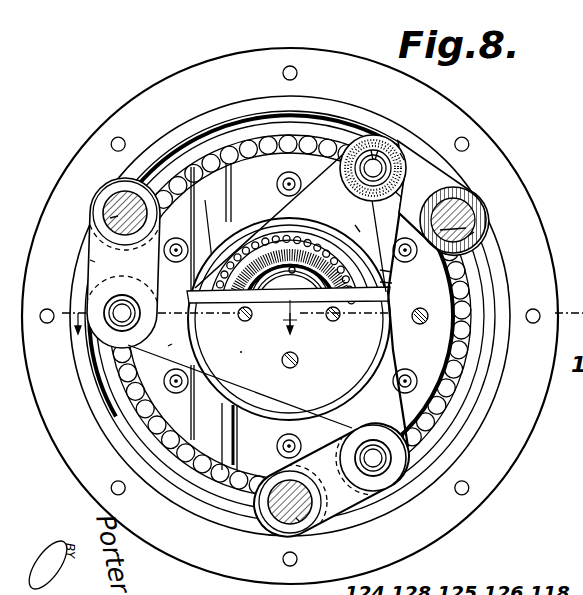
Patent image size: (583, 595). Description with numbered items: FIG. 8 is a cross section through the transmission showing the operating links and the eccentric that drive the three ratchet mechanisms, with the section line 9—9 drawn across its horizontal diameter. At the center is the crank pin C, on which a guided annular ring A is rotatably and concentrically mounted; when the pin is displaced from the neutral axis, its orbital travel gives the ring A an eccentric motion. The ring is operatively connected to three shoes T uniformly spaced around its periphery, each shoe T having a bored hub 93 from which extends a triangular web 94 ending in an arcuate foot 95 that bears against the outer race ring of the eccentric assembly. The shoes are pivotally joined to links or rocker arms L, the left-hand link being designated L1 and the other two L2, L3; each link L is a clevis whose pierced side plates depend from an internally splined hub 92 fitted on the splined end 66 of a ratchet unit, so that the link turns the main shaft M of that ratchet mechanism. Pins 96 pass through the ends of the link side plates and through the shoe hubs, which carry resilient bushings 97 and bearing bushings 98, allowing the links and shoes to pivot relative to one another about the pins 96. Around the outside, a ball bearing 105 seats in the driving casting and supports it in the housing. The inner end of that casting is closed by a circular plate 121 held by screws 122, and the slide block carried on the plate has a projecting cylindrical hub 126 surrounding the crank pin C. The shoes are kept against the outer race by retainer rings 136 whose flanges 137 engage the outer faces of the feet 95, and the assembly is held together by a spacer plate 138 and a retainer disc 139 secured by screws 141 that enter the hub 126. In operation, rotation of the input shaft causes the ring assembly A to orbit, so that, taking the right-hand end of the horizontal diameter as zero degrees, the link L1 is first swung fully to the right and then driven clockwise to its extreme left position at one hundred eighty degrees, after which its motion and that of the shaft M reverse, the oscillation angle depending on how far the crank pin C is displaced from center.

The section line 9- 9 is at (314, 325).
The splined ends 66 is at (468, 228).
The internally splined hubs 92 is at (272, 512).
The bored hub 93 is at (400, 153).
The triangular web 94 is at (274, 316).
The arcuate foot 95 is at (316, 230).
The pins 96 is at (380, 468).
The resilient bushings 97 is at (371, 150).
The bearing bushings 98 is at (376, 160).
The ball bearing 105 is at (198, 462).
The circular plate 121 is at (425, 331).
The screws 122 is at (262, 441).
The projecting cylindrical hub 126 is at (335, 320).
The retainer rings 136 is at (388, 284).
The flanges 137 is at (388, 272).
The spacer plate 138 is at (240, 297).
The retainer disc 139 is at (235, 359).
The screws 141 is at (299, 360).
The guided annular ring A is at (204, 228).
The crank pin C is at (290, 290).
The shoes T is at (262, 222).
The main shafts M is at (300, 522).
The links L is at (336, 525).
The left hand link L1 is at (100, 268).
The lever L2 is at (462, 197).
The lever L3 is at (356, 508).